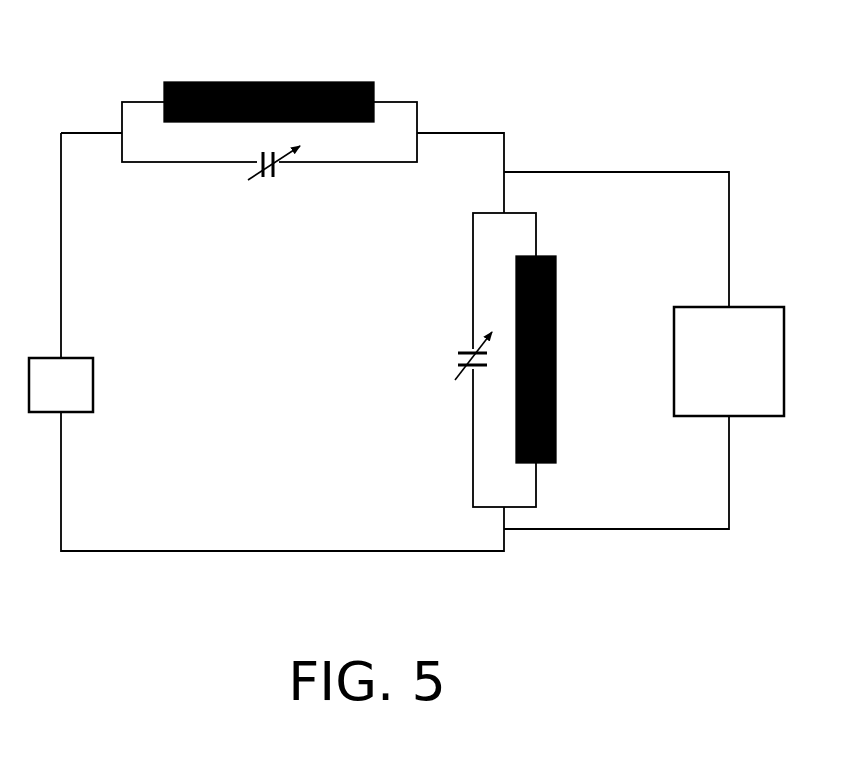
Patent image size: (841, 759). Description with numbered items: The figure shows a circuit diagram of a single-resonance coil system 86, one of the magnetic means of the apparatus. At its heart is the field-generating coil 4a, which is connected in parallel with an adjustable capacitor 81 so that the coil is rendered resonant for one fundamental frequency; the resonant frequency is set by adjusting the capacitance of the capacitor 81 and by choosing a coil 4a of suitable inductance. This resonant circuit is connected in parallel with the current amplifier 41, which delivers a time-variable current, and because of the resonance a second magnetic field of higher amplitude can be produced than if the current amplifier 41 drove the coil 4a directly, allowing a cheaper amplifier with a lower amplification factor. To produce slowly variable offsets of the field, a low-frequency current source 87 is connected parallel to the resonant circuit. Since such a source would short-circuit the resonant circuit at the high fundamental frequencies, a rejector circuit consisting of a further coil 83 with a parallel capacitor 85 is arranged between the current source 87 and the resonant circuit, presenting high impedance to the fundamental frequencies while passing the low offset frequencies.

The further coil 83 is at (270, 82).
The capacitor 85 is at (268, 198).
The single-resonance coil system 86 is at (553, 137).
The field-generating coil 4a is at (556, 295).
The adjustable capacitor 81 is at (440, 360).
The low-frequency current source 87 is at (93, 386).
The current amplifier 41 is at (674, 386).